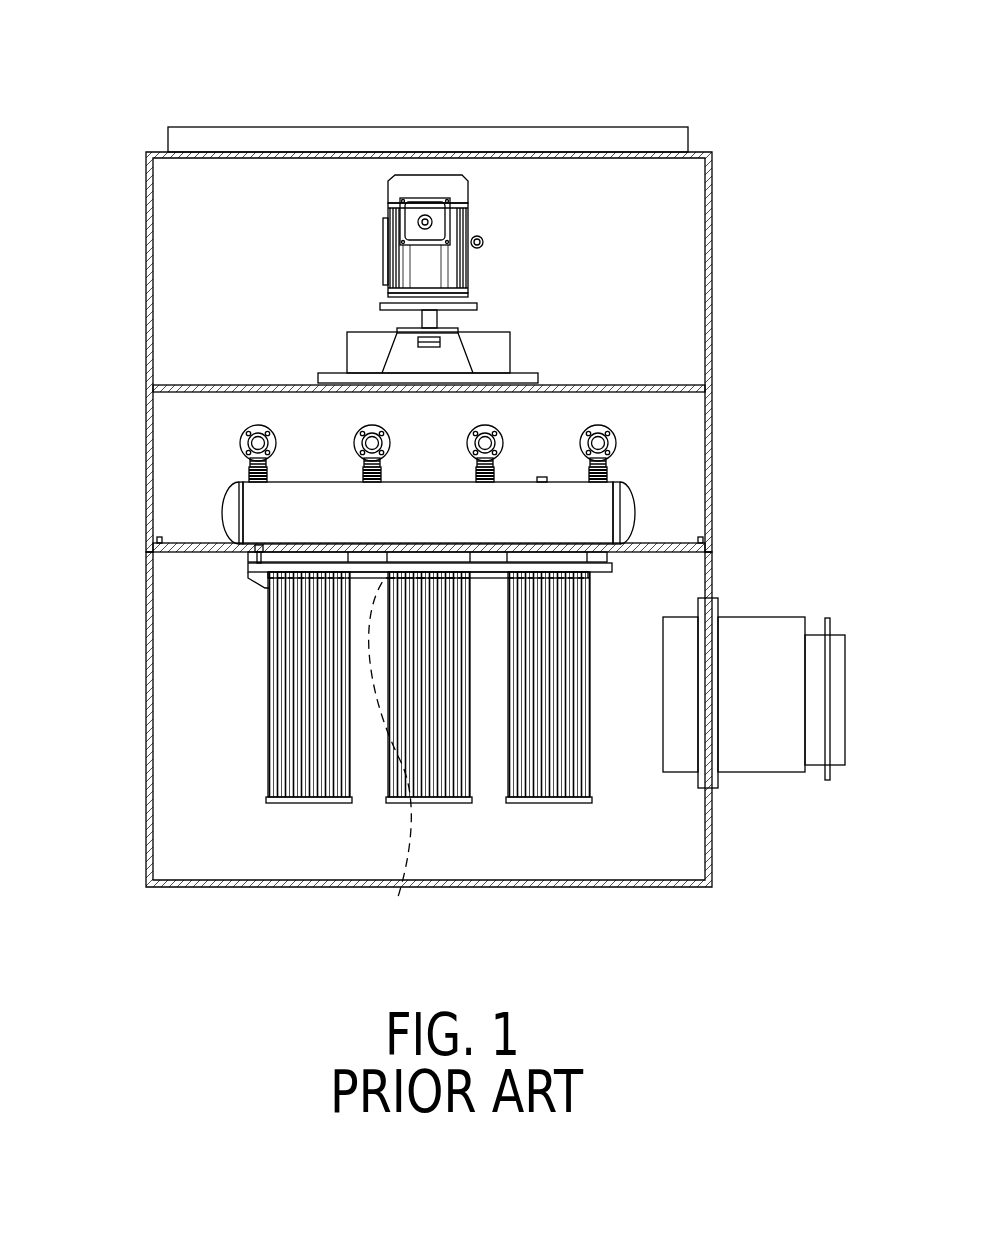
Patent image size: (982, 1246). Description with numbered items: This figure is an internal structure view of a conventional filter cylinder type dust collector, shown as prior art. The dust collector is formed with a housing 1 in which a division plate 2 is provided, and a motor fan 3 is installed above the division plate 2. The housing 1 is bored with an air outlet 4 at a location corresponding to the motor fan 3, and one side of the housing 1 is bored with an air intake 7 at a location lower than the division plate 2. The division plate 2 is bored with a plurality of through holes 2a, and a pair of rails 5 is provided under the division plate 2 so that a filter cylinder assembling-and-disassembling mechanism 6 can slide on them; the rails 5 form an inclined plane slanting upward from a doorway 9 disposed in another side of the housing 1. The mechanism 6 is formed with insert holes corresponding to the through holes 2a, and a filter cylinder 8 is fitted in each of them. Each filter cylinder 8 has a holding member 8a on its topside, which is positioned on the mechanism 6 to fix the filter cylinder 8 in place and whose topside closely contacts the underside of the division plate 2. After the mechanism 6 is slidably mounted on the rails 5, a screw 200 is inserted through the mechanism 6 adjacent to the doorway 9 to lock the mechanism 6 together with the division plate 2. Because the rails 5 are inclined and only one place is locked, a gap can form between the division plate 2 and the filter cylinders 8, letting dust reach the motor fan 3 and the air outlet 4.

The housing 1 is at (712, 234).
The division plate 2 is at (652, 552).
The through holes 2a is at (560, 553).
The motor fan 3 is at (430, 177).
The air outlet 4 is at (647, 137).
The rails 5 is at (397, 900).
The filter cylinder assembling-and-disassembling mechanism 6 is at (257, 573).
The air intake 7 is at (780, 748).
The filter cylinder 8 is at (287, 763).
The holding member 8a is at (305, 558).
The doorway 9 is at (146, 705).
The screw 200 is at (247, 540).